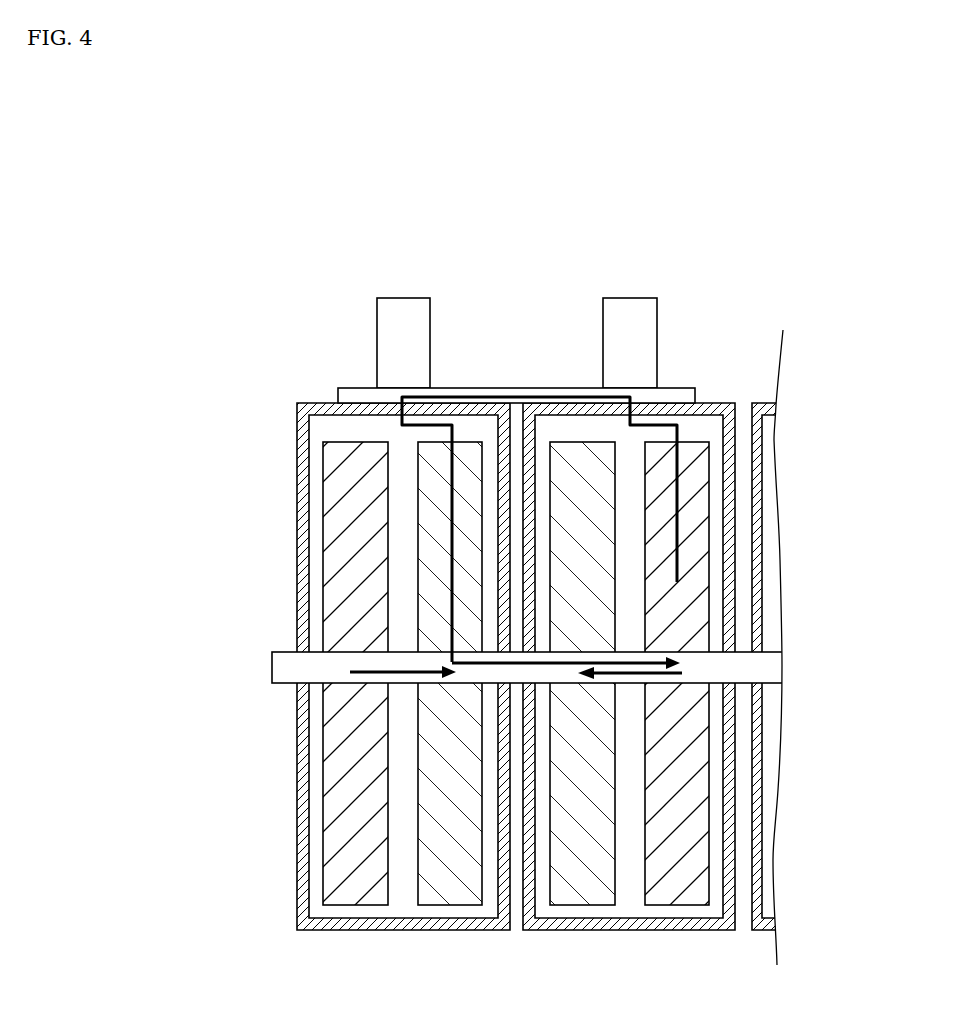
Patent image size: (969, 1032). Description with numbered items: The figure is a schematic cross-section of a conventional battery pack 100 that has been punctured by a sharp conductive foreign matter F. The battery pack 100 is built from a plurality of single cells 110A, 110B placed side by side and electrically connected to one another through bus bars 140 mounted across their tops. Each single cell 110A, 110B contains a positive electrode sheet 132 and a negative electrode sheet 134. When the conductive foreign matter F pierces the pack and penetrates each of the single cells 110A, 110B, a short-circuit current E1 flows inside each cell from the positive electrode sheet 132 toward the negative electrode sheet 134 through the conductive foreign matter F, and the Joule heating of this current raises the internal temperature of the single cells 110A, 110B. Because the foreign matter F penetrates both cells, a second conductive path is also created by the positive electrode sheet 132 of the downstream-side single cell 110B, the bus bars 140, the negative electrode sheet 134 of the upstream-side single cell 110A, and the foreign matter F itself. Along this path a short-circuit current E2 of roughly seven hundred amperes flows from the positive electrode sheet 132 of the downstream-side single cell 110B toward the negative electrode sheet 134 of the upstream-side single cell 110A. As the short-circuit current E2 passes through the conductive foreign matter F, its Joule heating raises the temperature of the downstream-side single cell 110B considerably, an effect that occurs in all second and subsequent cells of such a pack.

The battery pack 100 is at (298, 226).
The single cell 110A is at (296, 772).
The single cell 110B is at (738, 787).
The positive electrode sheet 132 is at (360, 906).
The negative electrode sheet 134 is at (455, 906).
The bus bar 140 is at (680, 388).
The conductive foreign matter F is at (272, 668).
The short-circuit current E1 is at (403, 670).
The short-circuit current E2 is at (513, 397).